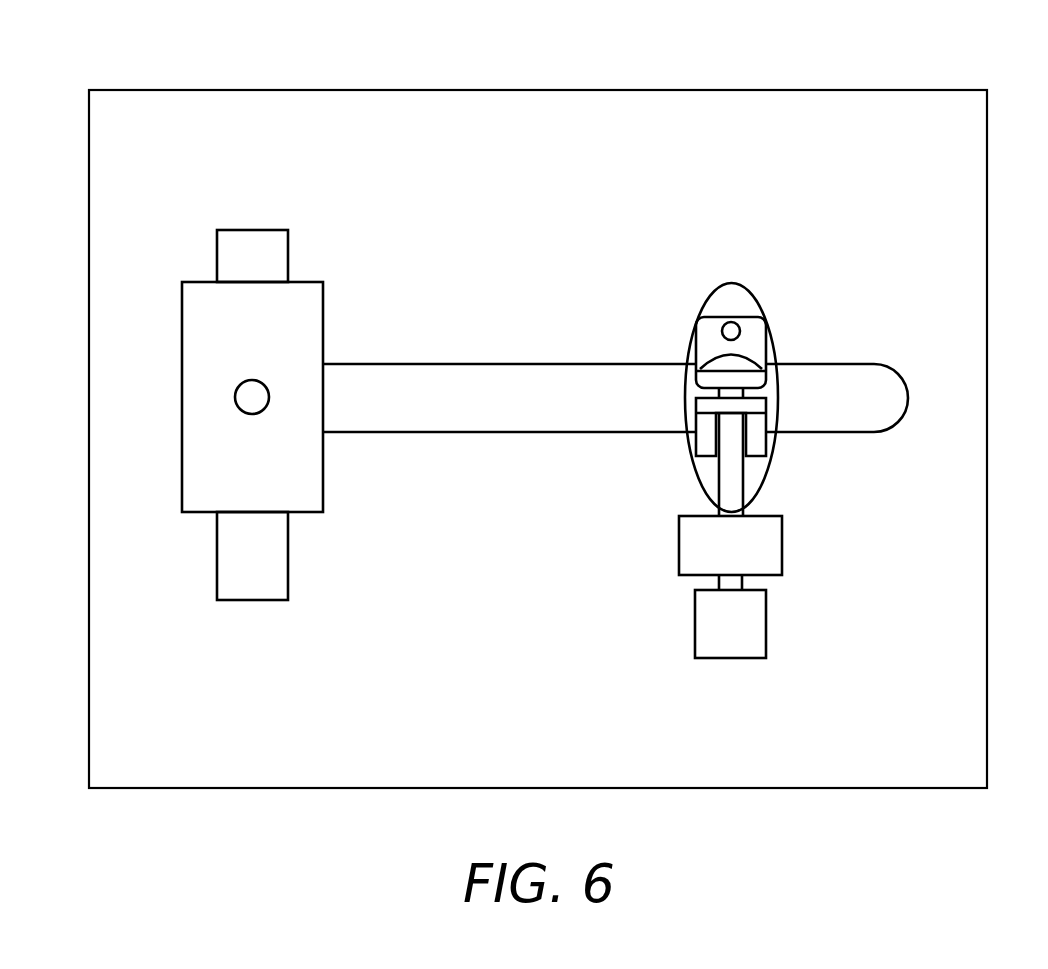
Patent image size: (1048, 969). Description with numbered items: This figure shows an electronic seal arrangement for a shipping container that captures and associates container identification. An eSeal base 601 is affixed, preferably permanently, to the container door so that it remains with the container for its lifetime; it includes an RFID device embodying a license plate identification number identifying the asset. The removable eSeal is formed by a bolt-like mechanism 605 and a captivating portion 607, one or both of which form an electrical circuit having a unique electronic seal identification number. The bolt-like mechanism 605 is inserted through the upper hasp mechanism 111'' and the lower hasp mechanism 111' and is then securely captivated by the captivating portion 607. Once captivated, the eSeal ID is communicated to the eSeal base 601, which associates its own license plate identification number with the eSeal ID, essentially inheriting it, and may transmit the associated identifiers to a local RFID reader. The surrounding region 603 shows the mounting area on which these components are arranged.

The base plate / frame 603 is at (975, 90).
The bolt-like mechanism 605 is at (748, 365).
The upper hasp mechanism 111'' is at (695, 355).
The lower hasp mechanism 111' is at (695, 424).
The eSeal base 601 is at (770, 547).
The captivating portion 607 is at (753, 633).